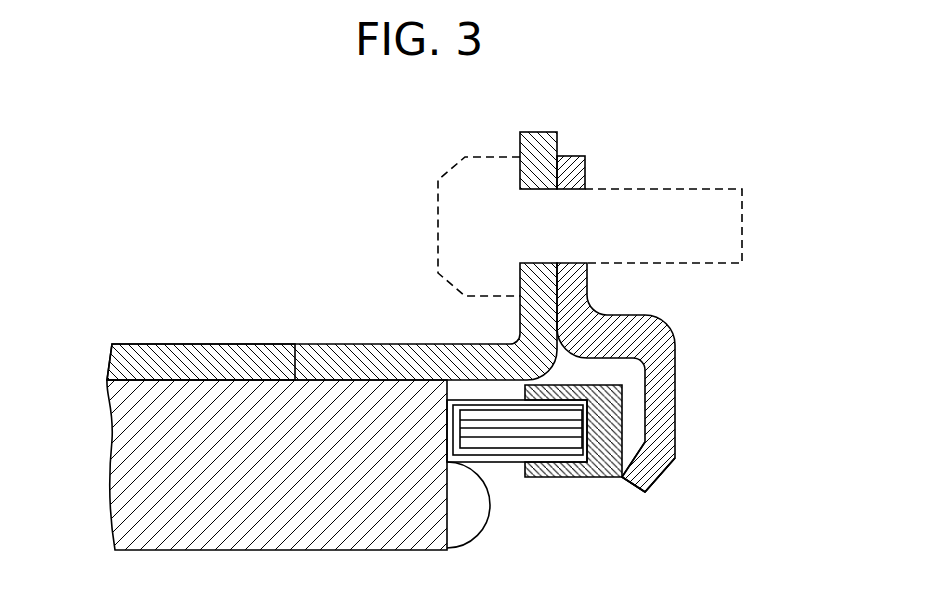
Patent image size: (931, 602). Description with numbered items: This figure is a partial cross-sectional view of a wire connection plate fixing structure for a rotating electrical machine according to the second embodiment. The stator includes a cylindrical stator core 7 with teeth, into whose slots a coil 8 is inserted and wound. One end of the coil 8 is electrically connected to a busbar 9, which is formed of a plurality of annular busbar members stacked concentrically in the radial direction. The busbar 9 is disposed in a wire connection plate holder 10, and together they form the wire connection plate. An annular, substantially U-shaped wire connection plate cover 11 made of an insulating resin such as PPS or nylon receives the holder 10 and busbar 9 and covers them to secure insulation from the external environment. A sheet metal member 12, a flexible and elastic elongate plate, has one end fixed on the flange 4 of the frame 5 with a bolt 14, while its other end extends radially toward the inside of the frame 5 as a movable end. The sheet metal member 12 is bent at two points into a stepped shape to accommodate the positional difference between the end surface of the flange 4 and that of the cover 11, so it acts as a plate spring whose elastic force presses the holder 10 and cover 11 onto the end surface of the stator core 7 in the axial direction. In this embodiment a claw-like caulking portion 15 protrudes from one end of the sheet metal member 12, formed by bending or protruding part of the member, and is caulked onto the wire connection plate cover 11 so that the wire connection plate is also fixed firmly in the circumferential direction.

The flange 4 is at (557, 145).
The frame 5 is at (392, 343).
The stator core 7 is at (295, 377).
The coil 8 is at (487, 508).
The busbar 9 is at (583, 403).
The wire connection plate holder 10 is at (500, 462).
The wire connection plate cover 11 is at (622, 435).
The sheet metal member 12 is at (585, 175).
The bolt 14 is at (438, 228).
The caulking portion 15 is at (658, 480).